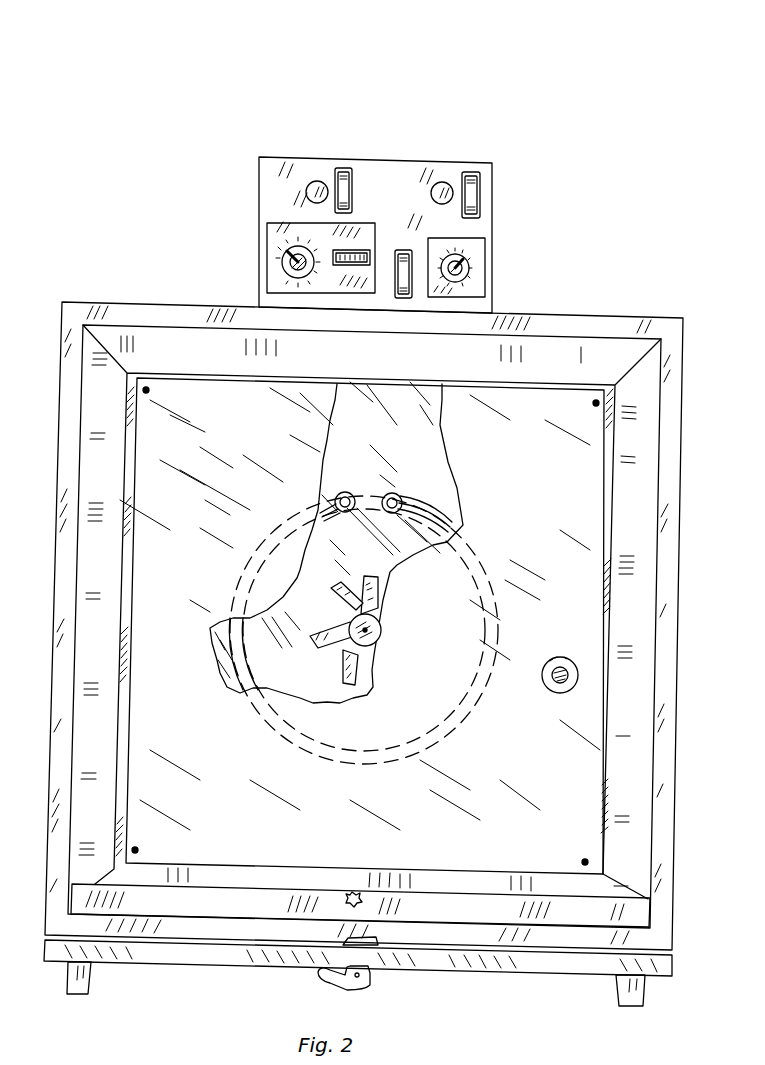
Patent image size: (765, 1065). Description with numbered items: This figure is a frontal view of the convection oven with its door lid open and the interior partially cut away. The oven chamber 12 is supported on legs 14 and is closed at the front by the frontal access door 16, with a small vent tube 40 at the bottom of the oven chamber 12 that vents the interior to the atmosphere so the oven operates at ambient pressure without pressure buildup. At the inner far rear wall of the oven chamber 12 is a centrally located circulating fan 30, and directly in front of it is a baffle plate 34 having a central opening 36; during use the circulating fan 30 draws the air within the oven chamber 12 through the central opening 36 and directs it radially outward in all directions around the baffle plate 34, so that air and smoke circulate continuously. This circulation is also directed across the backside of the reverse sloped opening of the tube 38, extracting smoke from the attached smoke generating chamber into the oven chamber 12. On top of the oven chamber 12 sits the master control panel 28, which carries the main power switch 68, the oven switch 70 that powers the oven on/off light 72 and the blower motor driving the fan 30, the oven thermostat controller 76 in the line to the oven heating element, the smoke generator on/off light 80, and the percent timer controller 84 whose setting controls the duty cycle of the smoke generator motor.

The oven chamber 12 is at (540, 320).
The legs 14 is at (90, 983).
The frontal access door 16 is at (472, 960).
The master control panel 28 is at (493, 188).
The circulating fan 30 is at (364, 630).
The baffle plate 34 is at (200, 703).
The central opening 36 is at (376, 618).
The tube 38 is at (560, 692).
The vent tube 40 is at (350, 893).
The main power switch 68 is at (403, 255).
The oven switch 70 is at (345, 170).
The oven on/off light 72 is at (312, 182).
The oven thermostat controller 76 is at (290, 255).
The smoke generator on/off light 80 is at (440, 183).
The percent timer controller 84 is at (482, 263).